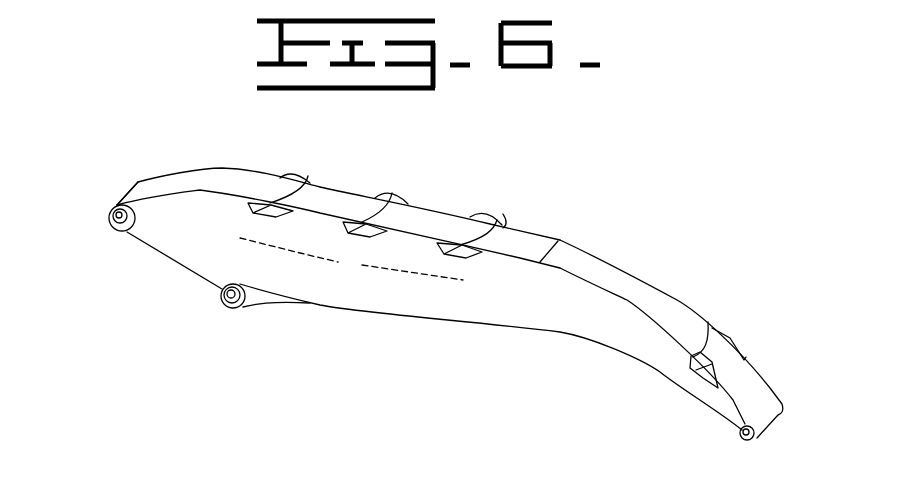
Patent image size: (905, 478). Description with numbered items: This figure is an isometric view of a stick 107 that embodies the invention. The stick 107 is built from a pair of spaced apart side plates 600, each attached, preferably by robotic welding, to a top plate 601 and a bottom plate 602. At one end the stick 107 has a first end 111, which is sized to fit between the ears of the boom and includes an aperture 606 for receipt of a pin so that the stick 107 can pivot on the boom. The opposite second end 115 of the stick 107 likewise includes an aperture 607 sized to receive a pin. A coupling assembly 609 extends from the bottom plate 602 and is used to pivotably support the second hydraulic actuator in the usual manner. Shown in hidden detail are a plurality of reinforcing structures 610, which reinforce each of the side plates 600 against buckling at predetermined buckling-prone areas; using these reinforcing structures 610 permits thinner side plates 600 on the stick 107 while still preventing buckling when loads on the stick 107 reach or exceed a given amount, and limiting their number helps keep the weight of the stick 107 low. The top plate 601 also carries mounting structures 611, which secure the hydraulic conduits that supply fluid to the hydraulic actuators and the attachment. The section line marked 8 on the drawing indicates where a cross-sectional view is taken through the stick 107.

The section line 8- 8 is at (242, 121).
The stick 107 is at (539, 148).
The first end 111 is at (112, 180).
The second end 115 is at (776, 377).
The side plates 600 is at (627, 257).
The top plate 601 is at (232, 187).
The bottom plate 602 is at (447, 320).
The aperture 606 is at (110, 226).
The aperture 607 is at (742, 437).
The coupling assembly 609 is at (217, 283).
The reinforcing structures 610 is at (262, 252).
The mounting structures 611 is at (308, 176).